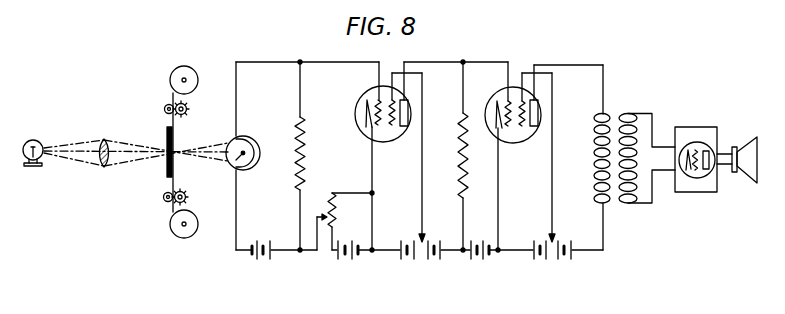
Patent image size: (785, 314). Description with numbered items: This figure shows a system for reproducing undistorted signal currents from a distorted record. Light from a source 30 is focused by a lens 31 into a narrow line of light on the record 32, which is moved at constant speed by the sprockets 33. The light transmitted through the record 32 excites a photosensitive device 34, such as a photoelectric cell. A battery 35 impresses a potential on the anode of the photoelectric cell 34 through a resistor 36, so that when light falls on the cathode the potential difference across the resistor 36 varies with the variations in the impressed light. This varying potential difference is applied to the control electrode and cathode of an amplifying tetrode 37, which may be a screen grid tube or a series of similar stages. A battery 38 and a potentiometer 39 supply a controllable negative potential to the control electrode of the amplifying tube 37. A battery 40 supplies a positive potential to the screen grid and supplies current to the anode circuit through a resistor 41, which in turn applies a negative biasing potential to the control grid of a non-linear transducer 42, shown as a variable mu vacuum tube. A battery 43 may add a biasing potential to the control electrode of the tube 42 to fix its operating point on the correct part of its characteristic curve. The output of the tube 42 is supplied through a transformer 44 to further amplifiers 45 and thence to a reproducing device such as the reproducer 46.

The light source 30 is at (41, 140).
The lens 31 is at (104, 139).
The record 32 is at (178, 183).
The sprockets 33 is at (189, 198).
The photosensitive device 34 is at (255, 168).
The battery 35 is at (264, 262).
The resistor 36 is at (311, 154).
The amplifying tetrode 37 is at (393, 142).
The battery 38 is at (352, 262).
The potentiometer 39 is at (339, 212).
The battery 40 is at (427, 261).
The resistor 41 is at (470, 165).
The non-linear transducer 42 is at (524, 143).
The battery 43 is at (482, 261).
The transformer 44 is at (617, 110).
The further amplifiers 45 is at (700, 127).
The reproducer 46 is at (755, 139).